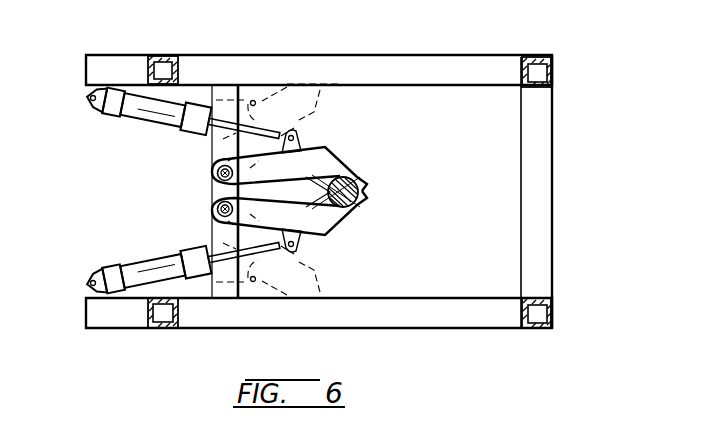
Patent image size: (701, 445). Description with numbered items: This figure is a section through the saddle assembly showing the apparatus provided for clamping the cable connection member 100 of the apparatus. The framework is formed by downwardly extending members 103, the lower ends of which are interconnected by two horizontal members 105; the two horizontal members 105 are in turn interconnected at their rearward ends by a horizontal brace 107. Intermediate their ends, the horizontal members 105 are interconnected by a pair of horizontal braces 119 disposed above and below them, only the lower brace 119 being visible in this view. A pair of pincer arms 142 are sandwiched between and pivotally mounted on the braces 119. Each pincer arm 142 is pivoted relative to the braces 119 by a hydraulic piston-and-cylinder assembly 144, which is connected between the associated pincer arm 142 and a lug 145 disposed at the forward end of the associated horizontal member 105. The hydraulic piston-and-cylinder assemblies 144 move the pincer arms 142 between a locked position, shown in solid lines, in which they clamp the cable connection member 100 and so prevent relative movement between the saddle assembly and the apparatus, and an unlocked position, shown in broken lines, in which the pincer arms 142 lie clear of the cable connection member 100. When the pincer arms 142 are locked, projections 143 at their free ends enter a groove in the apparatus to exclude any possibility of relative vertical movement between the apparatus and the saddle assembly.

The cable connection member 100 is at (362, 177).
The downwardly extending members 103 is at (553, 70).
The horizontal members 105 is at (387, 56).
The horizontal brace 107 is at (548, 183).
The horizontal braces 119 is at (213, 145).
The pincer arms 142 is at (325, 157).
The projections 143 is at (368, 199).
The hydraulic piston-and-cylinder assembly 144 is at (155, 107).
The lug 145 is at (88, 97).